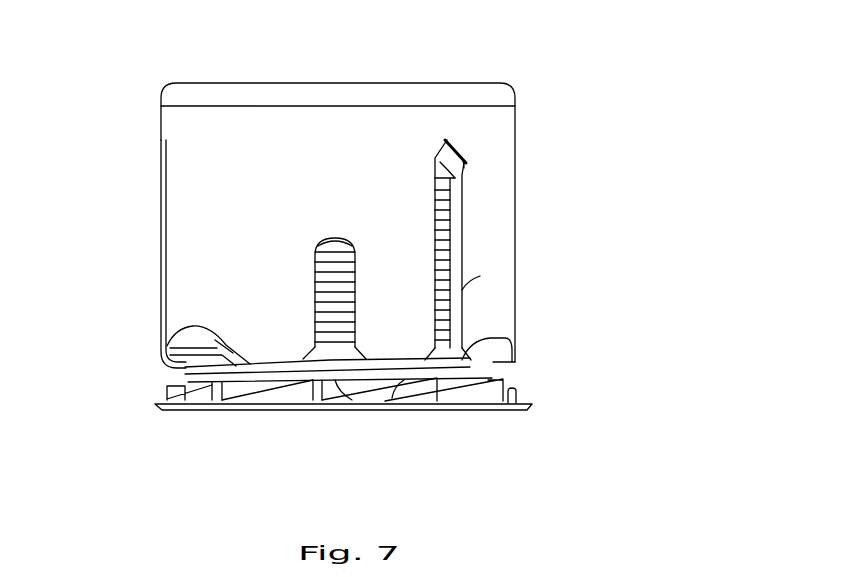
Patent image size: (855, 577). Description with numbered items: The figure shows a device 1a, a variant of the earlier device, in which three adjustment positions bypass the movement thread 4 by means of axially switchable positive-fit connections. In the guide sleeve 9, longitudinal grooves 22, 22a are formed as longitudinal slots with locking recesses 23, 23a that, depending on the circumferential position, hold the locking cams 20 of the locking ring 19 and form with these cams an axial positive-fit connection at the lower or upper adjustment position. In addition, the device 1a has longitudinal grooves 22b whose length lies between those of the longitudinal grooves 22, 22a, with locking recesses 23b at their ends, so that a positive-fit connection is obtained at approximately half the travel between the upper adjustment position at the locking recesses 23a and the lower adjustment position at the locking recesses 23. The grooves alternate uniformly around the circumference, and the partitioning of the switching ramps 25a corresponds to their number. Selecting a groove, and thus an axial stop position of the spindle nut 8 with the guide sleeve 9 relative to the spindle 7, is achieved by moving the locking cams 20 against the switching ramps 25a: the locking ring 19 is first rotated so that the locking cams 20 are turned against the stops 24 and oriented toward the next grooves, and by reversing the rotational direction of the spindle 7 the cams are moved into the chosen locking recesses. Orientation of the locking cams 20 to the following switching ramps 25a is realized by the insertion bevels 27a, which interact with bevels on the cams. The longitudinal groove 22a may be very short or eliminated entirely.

The device 1a is at (602, 56).
The guide sleeve 9 is at (326, 126).
The locking recesses 23 is at (449, 140).
The locking ring 19 is at (465, 160).
The locking cams 20 is at (456, 177).
The movement thread 4 is at (455, 253).
The longitudinal grooves 22 is at (452, 280).
The locking recesses 23b is at (330, 238).
The longitudinal grooves 22b is at (316, 276).
The locking recesses 23a is at (182, 329).
The longitudinal grooves 22a is at (167, 352).
The insertion bevels 27a is at (476, 356).
The spindle 7 is at (306, 405).
The switching ramps 25a is at (402, 400).
The stops 24 is at (452, 402).
The spindle nut 8 is at (512, 406).